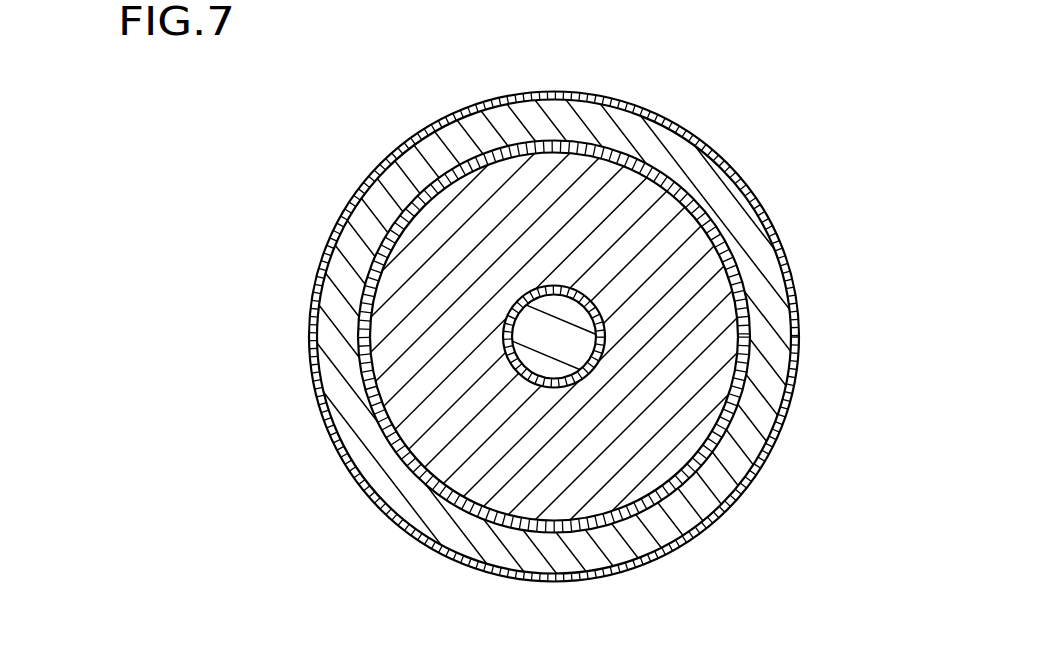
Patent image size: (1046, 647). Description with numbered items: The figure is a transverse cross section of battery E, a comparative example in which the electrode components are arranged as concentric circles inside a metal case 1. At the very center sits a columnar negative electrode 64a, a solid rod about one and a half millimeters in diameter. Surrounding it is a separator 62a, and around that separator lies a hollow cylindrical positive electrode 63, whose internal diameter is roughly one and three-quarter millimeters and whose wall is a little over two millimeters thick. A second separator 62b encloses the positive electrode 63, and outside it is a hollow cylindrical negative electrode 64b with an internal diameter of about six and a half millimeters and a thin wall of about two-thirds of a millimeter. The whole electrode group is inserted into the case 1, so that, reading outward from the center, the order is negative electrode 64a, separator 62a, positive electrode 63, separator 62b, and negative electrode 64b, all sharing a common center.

The metal case 1 is at (770, 223).
The separator 62a is at (581, 288).
The separator 62b is at (383, 503).
The hollow cylindrical positive electrode 63 is at (640, 380).
The columnar negative electrode 64a is at (517, 297).
The hollow cylindrical negative electrode 64b is at (432, 190).